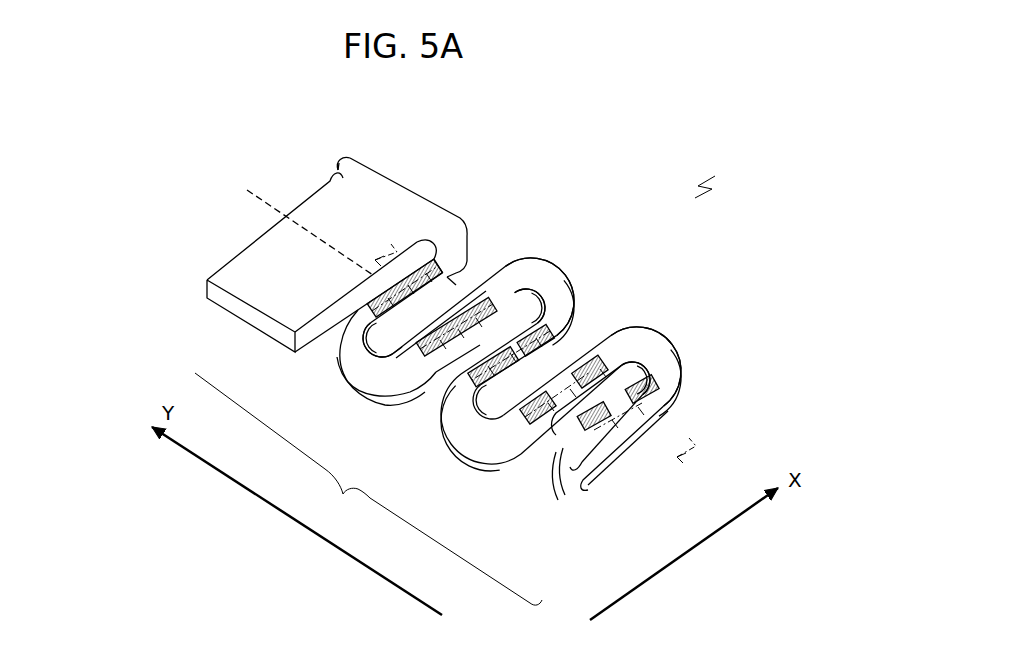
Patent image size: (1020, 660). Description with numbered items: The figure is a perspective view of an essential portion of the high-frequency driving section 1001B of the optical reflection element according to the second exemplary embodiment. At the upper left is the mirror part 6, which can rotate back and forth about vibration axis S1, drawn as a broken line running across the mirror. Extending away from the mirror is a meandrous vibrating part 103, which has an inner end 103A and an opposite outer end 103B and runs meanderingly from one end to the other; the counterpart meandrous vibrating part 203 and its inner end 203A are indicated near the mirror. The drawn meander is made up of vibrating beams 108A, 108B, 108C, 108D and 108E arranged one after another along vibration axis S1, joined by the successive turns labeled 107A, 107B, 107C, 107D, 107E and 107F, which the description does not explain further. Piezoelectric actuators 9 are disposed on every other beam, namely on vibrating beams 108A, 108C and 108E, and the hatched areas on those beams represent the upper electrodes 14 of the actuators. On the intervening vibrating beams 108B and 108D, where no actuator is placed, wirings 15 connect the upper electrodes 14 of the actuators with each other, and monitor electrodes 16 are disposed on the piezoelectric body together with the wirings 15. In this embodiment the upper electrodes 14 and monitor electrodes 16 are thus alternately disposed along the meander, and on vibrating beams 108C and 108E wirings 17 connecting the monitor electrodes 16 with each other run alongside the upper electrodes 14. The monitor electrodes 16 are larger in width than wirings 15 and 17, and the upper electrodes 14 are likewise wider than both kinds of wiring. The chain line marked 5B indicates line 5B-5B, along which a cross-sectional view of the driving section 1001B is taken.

The meandrous vibrating part 203 is at (328, 167).
The inner end of meandrous vibrating part 203A is at (337, 162).
The mirror part 6 is at (340, 232).
The inner end of meandrous vibrating part 103A is at (442, 233).
The first bent portion 107A is at (462, 243).
The vibration axis S1 is at (298, 226).
The meandrous vibrating part 103 is at (680, 360).
The bent portion 107B is at (352, 376).
The bent portion 107C is at (573, 300).
The bent portion 107D is at (460, 443).
The bent portion 107E is at (650, 360).
The bent portion at free end 107F is at (576, 487).
The outer end of meandrous vibrating part 103B is at (586, 492).
The piezoelectric actuator 9 is at (367, 331).
The upper electrode 14 is at (378, 340).
The vibrating beam 108A is at (430, 292).
The vibrating beam 108B is at (447, 354).
The vibrating beam 108C is at (537, 362).
The vibrating beam 108D is at (553, 421).
The vibrating beam 108E is at (645, 437).
The line 5B- 5B is at (525, 364).
The wiring 15 is at (398, 353).
The monitor electrode 16 is at (546, 290).
The wiring 17 is at (543, 316).
The high-frequency driving section 1001B is at (469, 375).